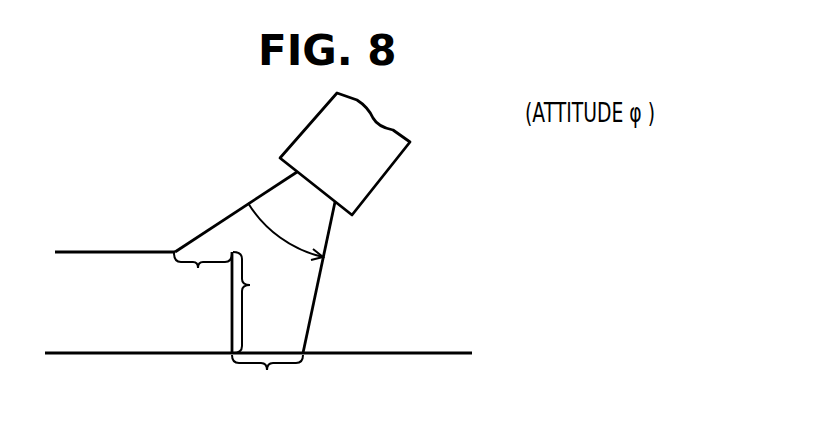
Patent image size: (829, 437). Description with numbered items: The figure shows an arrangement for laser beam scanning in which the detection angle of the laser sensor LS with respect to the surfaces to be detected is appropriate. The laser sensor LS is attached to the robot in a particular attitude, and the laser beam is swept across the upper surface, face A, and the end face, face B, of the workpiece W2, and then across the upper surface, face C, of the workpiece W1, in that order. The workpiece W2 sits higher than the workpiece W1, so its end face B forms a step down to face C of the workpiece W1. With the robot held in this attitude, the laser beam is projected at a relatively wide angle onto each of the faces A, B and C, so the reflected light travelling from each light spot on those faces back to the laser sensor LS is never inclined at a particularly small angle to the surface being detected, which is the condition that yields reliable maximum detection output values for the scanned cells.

The laser sensor LS is at (377, 160).
The workpiece W1 is at (430, 407).
The workpiece W2 is at (140, 327).
The face A is at (203, 282).
The face B is at (254, 302).
The face C is at (267, 385).